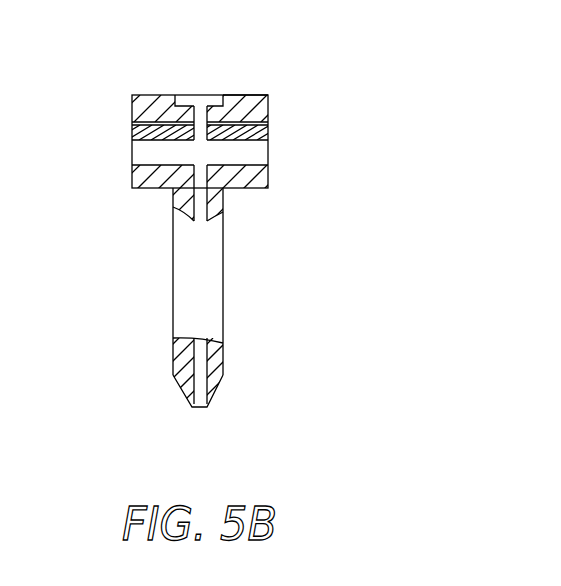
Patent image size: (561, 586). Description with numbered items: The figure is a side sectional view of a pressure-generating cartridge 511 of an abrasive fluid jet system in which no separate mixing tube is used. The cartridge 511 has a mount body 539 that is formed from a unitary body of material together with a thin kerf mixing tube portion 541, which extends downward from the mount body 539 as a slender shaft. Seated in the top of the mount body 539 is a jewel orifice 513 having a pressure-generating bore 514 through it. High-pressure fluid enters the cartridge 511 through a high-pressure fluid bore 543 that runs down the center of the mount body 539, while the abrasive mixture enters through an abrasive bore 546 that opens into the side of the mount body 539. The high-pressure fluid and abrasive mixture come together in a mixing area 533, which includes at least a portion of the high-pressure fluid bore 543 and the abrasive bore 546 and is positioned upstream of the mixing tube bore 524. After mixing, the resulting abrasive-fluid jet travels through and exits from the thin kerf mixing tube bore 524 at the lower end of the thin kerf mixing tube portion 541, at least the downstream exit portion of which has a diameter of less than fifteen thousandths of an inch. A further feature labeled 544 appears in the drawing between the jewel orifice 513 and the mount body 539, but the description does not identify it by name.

The pressure-generating cartridge 511 is at (304, 101).
The jewel orifice 513 is at (216, 91).
The pressure-generating bore 514 is at (197, 91).
The thin kerf mixing tube bore 524 is at (198, 404).
The mixing area 533 is at (192, 155).
The mount body 539 is at (134, 107).
The thin kerf mixing tube portion 541 is at (224, 213).
The high-pressure fluid bore 543 is at (202, 132).
The seal layer 544 is at (230, 121).
The abrasive bore 546 is at (230, 152).